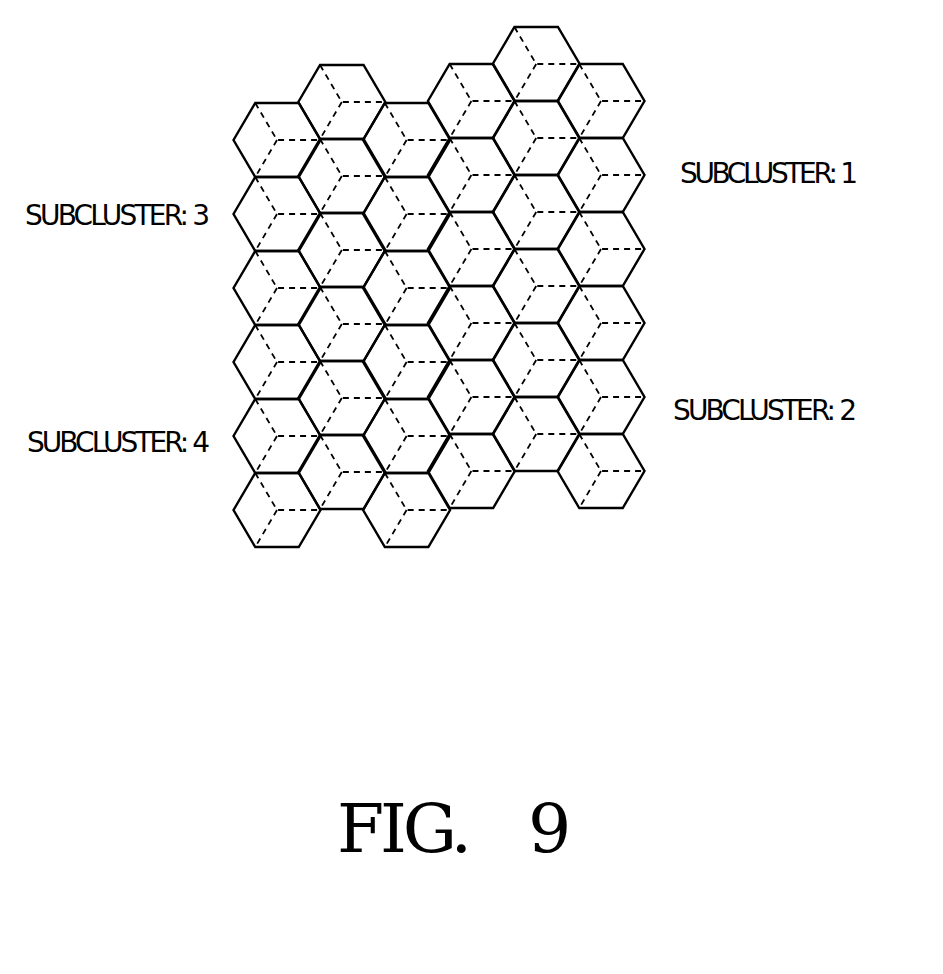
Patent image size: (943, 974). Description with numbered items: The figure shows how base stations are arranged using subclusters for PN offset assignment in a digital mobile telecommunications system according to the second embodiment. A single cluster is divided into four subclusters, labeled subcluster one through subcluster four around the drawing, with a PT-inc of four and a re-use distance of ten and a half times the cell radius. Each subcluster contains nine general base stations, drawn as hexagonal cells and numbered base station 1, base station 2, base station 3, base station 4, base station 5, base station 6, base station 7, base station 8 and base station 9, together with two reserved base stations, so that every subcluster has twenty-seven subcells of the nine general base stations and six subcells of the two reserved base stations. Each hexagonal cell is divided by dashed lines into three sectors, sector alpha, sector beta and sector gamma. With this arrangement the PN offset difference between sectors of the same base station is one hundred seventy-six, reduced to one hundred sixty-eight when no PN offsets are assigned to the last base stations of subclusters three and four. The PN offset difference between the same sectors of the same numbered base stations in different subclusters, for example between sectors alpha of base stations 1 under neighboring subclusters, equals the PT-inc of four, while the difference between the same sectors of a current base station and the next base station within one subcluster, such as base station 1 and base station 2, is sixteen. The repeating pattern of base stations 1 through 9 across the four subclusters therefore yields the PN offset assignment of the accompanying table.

The base station 1 is at (438, 268).
The base station 2 is at (374, 379).
The base station 3 is at (503, 231).
The base station 4 is at (374, 305).
The base station 5 is at (503, 379).
The base station 6 is at (374, 231).
The base station 7 is at (503, 305).
The base station 8 is at (438, 342).
The base station 9 is at (438, 194).